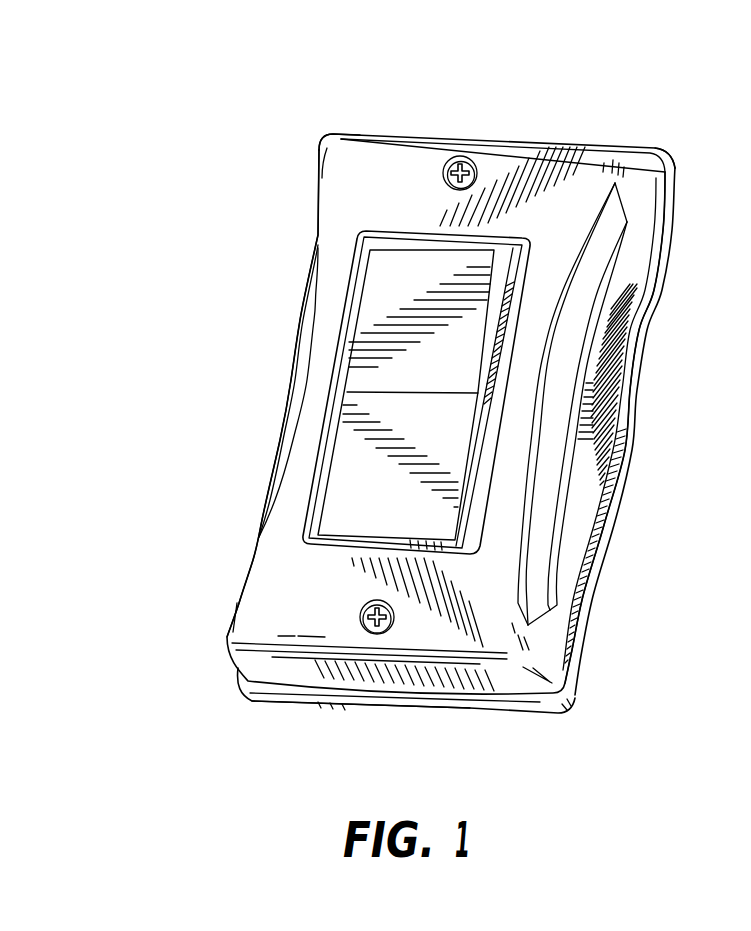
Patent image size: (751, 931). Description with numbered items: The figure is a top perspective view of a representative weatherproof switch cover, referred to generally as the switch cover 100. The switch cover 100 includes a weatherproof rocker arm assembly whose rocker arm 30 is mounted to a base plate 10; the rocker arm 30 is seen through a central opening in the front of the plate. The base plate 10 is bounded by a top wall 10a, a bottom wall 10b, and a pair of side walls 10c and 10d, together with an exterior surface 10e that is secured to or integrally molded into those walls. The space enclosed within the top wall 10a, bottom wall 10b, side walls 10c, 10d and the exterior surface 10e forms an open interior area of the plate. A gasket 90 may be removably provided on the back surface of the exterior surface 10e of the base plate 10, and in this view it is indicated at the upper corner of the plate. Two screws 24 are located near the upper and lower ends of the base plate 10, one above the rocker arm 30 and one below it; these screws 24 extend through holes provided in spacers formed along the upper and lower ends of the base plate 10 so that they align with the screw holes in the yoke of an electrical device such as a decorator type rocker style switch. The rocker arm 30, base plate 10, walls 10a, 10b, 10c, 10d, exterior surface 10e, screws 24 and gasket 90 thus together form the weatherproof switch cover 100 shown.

The switch cover 100 is at (157, 717).
The base plate 10 is at (630, 183).
The top wall 10a is at (538, 138).
The bottom wall 10b is at (478, 680).
The side wall 10c is at (555, 645).
The side wall 10d is at (227, 632).
The exterior surface 10e is at (358, 150).
The screws 24 is at (462, 155).
The rocker arm 30 is at (383, 302).
The gasket 90 is at (657, 148).